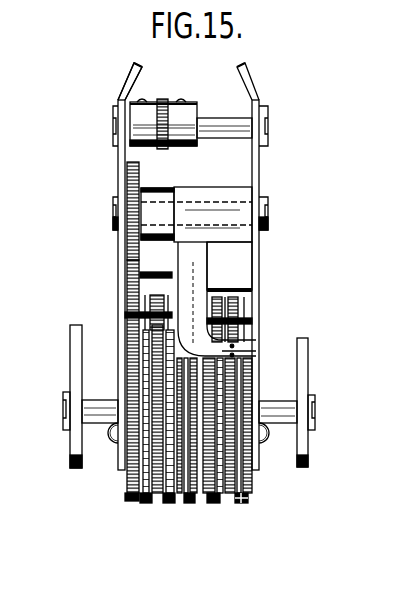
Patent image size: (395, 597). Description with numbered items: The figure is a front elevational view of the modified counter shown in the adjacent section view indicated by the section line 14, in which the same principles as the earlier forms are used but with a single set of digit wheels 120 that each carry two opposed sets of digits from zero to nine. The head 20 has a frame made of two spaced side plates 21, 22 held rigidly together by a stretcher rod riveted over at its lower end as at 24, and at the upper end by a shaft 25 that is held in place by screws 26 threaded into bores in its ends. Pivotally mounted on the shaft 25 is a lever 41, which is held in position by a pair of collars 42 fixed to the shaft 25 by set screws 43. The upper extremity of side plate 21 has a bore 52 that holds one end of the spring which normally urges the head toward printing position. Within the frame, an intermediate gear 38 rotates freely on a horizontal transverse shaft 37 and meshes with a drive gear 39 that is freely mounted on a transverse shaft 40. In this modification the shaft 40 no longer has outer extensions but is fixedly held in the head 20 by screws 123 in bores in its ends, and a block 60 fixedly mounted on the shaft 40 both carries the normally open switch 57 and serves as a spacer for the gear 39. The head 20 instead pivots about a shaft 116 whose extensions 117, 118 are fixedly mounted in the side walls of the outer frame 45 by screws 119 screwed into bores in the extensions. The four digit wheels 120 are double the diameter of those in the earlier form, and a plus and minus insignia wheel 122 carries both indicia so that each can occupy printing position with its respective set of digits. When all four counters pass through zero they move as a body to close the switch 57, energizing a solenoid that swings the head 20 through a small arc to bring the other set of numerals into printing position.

The section line of FIG. 14 is at (323, 70).
The head 20 is at (272, 332).
The side plate 21 is at (259, 272).
The side plate 22 is at (118, 258).
The riveted end of stretcher rod 24 is at (109, 443).
The shaft 25 is at (215, 117).
The screws 26 is at (113, 116).
The shaft 37 is at (245, 296).
The intermediate gear 38 is at (127, 276).
The drive gear 39 is at (139, 172).
The shaft 40 is at (216, 200).
The lever 41 is at (172, 87).
The collars 42 is at (183, 148).
The set screws 43 is at (182, 101).
The frame 45 is at (308, 380).
The bore 52 is at (135, 76).
The switch 57 is at (202, 276).
The block 60 is at (238, 188).
The shaft 116 is at (278, 401).
The shaft extension 117 is at (102, 400).
The shaft extension 118 is at (290, 425).
The screws 119 is at (66, 393).
The digit wheels 120 is at (147, 503).
The plus and minus insignia wheel 122 is at (248, 503).
The screws 123 is at (113, 204).